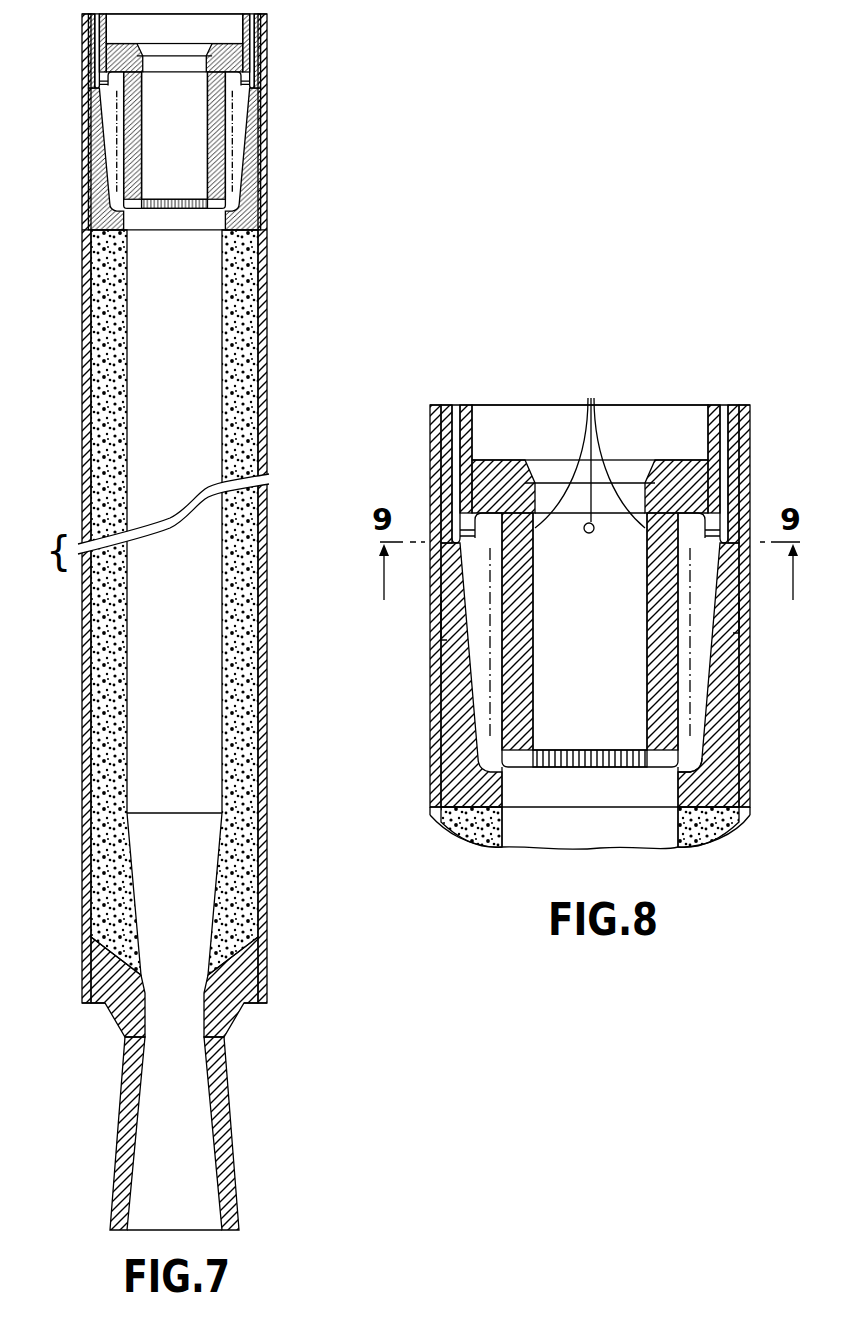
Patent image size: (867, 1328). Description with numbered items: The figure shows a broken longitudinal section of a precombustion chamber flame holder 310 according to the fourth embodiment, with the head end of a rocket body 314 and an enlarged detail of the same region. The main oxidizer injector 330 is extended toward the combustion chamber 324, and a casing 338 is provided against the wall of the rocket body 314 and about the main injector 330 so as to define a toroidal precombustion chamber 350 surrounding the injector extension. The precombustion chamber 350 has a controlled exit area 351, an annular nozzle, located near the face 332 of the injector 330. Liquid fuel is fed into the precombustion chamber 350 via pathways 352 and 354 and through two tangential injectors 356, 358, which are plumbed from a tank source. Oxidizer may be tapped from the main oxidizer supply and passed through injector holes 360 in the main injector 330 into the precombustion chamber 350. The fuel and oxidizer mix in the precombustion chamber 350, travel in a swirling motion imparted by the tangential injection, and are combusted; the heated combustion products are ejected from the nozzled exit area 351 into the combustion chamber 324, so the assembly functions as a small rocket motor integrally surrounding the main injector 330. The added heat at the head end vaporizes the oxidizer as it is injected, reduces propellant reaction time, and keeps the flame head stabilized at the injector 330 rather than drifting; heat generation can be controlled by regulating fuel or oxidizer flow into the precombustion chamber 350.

In FIG. 7, the cartridge assembly 310 is at (308, 129).
In FIG. 7, the rocket body 314 is at (84, 231).
In FIG. 8, the rocket body 314 is at (432, 642).
In FIG. 7, the combustion chamber 324 is at (195, 315).
In FIG. 8, the combustion chamber 324 is at (525, 833).
In FIG. 7, the main oxidizer injector 330 is at (220, 173).
In FIG. 8, the main oxidizer injector 330 is at (502, 705).
In FIG. 8, the face of the injector 332 is at (558, 770).
In FIG. 7, the casing 338 is at (93, 186).
In FIG. 8, the casing 338 is at (450, 670).
In FIG. 7, the precombustion chamber 350 is at (110, 160).
In FIG. 8, the precombustion chamber 350 is at (710, 607).
In FIG. 8, the exit area 351 is at (675, 770).
In FIG. 8, the pathway 352 is at (457, 455).
In FIG. 8, the pathway 354 is at (722, 445).
In FIG. 8, the tangential injector 356 is at (462, 505).
In FIG. 8, the tangential injector 358 is at (708, 533).
In FIG. 8, the injector holes 360 is at (590, 449).